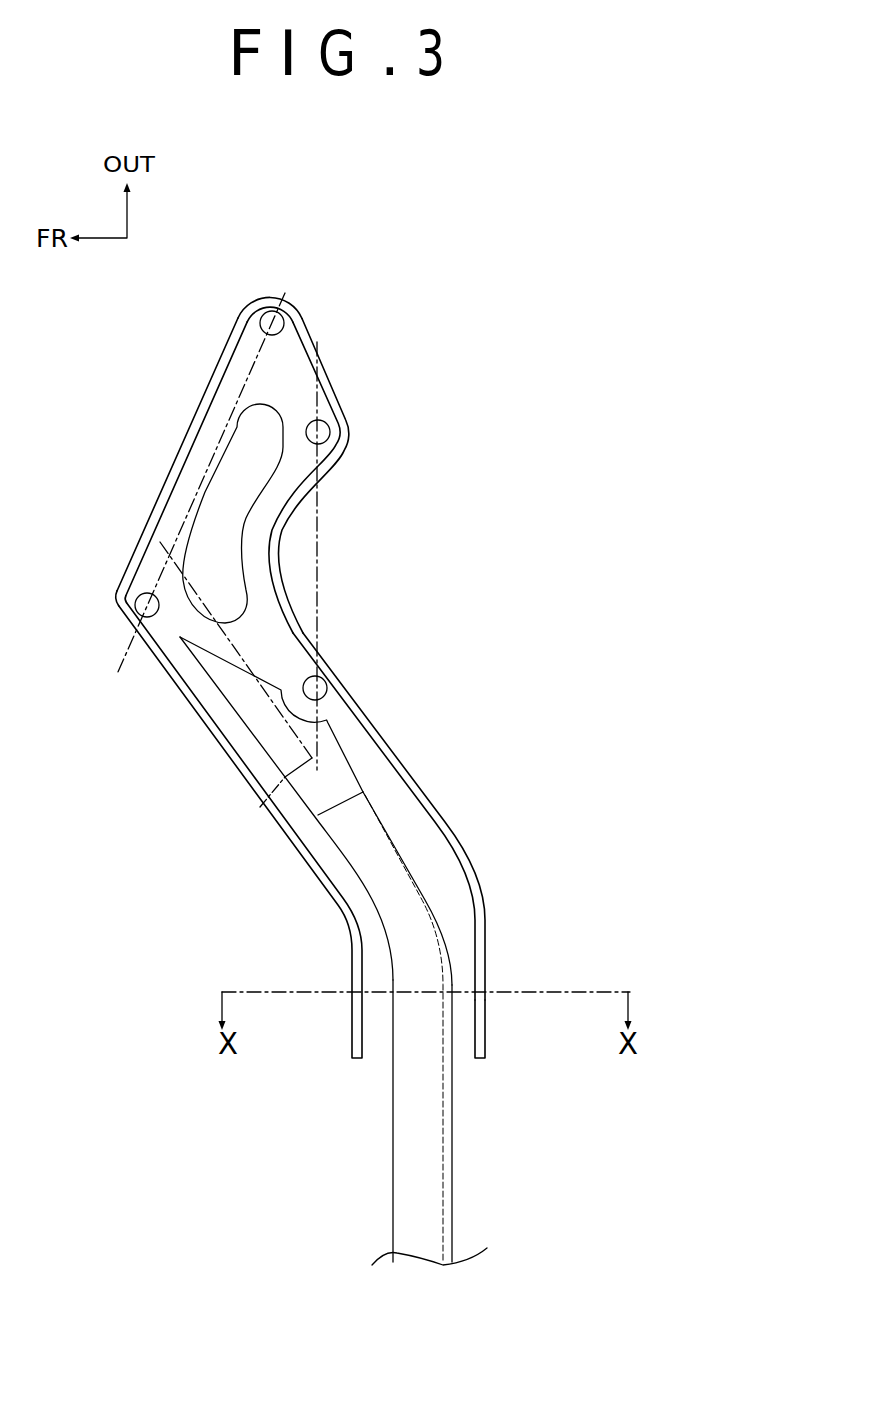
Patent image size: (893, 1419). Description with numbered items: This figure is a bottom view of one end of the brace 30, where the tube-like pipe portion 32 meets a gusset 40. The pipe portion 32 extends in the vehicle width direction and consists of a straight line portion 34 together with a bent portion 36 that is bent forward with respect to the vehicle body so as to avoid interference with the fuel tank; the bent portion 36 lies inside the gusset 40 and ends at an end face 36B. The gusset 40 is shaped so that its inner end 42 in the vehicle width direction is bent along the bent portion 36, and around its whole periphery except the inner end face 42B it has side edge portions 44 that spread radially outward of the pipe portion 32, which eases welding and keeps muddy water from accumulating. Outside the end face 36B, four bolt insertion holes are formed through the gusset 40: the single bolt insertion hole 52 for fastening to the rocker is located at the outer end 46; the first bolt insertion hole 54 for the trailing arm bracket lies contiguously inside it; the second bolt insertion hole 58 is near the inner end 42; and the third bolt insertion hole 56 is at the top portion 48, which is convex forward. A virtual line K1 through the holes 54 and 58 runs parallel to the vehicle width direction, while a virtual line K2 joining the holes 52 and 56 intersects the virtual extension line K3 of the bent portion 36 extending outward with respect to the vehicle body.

The brace 30 is at (462, 515).
The pipe portion 32 is at (384, 1180).
The line portion 34 is at (440, 1165).
The bent portion 36 is at (418, 908).
The end face of the bent portion 36B is at (360, 792).
The gusset 40 is at (160, 488).
The inner end 42 is at (478, 877).
The inner end face 42B is at (469, 1062).
The side edge portions 44 is at (437, 811).
The outer end 46 is at (260, 298).
The top portion 48 is at (112, 615).
The bolt insertion hole 52 is at (281, 308).
The first bolt insertion hole 54 is at (350, 437).
The third bolt insertion hole 56 is at (127, 588).
The second bolt insertion hole 58 is at (328, 680).
The virtual line K1 is at (320, 580).
The virtual line K2 is at (243, 388).
The virtual extension line K3 is at (260, 807).